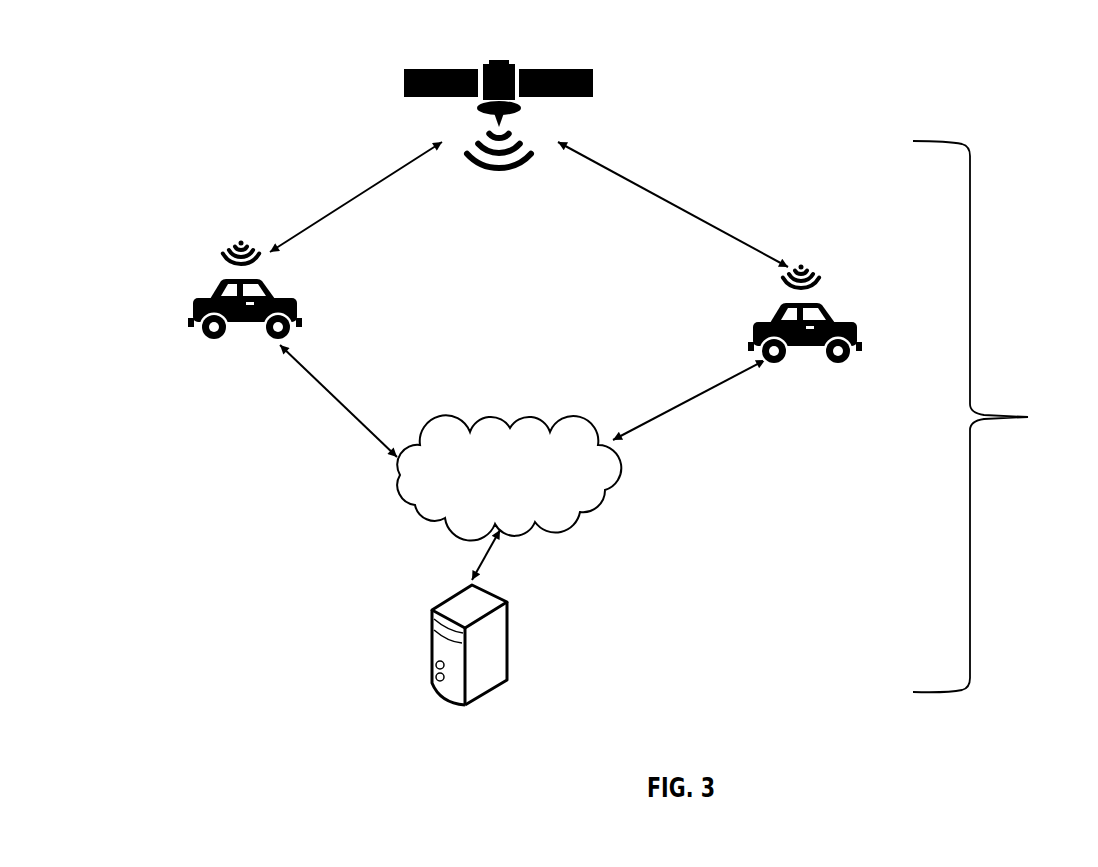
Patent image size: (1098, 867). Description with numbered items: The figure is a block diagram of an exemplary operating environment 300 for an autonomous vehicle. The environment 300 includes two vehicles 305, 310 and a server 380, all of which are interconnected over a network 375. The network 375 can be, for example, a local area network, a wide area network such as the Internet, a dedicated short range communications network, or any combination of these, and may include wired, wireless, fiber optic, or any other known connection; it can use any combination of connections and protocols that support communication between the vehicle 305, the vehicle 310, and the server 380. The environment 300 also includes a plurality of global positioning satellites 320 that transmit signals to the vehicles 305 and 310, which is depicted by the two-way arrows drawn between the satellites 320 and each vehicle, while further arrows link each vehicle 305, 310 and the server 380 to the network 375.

The operating environment 300 is at (1093, 430).
The vehicle 305 is at (192, 327).
The vehicle 310 is at (752, 352).
The global positioning satellites 320 is at (404, 74).
The network 375 is at (509, 477).
The server 380 is at (508, 681).